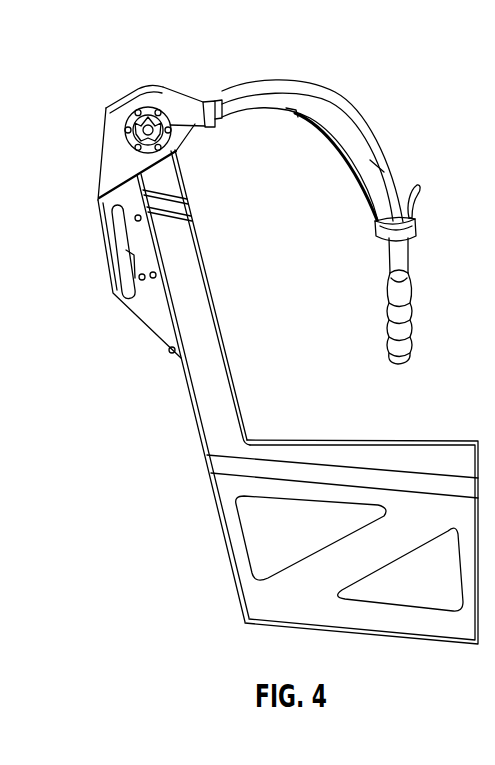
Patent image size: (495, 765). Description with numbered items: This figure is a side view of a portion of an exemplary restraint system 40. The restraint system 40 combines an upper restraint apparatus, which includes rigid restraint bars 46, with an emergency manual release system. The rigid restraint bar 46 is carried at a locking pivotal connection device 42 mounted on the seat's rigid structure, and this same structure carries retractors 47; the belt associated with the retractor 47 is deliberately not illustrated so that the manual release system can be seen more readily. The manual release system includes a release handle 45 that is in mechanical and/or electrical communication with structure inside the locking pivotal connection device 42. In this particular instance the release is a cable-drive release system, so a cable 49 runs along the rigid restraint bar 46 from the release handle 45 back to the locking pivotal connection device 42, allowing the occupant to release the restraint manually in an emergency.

The restraint system 40 is at (260, 344).
The locking pivotal connection device 42 is at (160, 110).
The release handle 45 is at (422, 204).
The rigid restraint bar 46 is at (372, 160).
The retractor 47 is at (122, 268).
The cable 49 is at (333, 165).